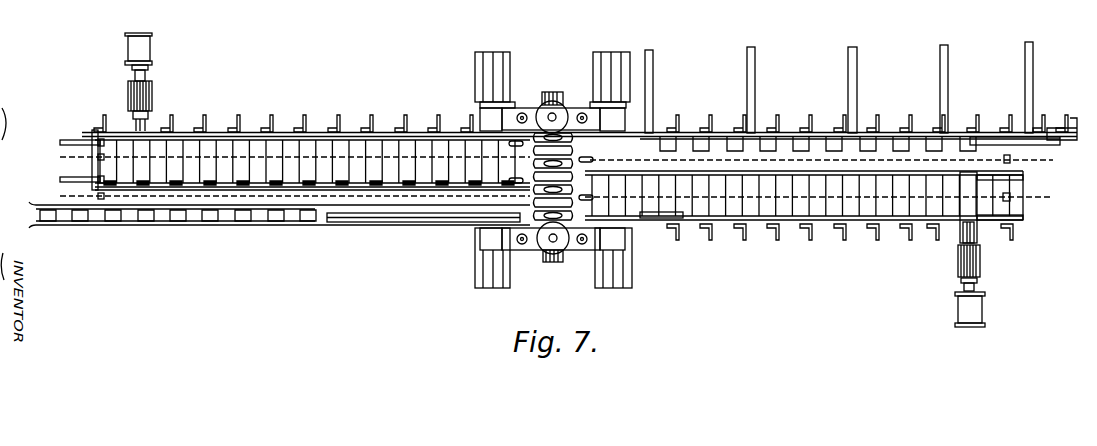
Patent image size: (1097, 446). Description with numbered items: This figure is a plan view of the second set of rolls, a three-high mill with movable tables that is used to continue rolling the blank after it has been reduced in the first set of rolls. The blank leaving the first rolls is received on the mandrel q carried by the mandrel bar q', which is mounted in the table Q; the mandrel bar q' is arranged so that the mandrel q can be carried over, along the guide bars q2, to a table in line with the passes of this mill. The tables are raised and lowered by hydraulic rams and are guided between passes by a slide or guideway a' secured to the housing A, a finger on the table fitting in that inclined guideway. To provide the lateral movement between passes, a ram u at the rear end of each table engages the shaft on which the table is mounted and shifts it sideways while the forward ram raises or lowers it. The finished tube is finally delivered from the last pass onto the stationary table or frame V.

The ram u is at (559, 180).
The housing A is at (553, 170).
The mandrel q is at (559, 108).
The guide bars q2 is at (849, 87).
The guideway a' is at (818, 146).
The mandrel bar q' is at (850, 152).
The table Q is at (968, 143).
The stationary table V is at (230, 226).